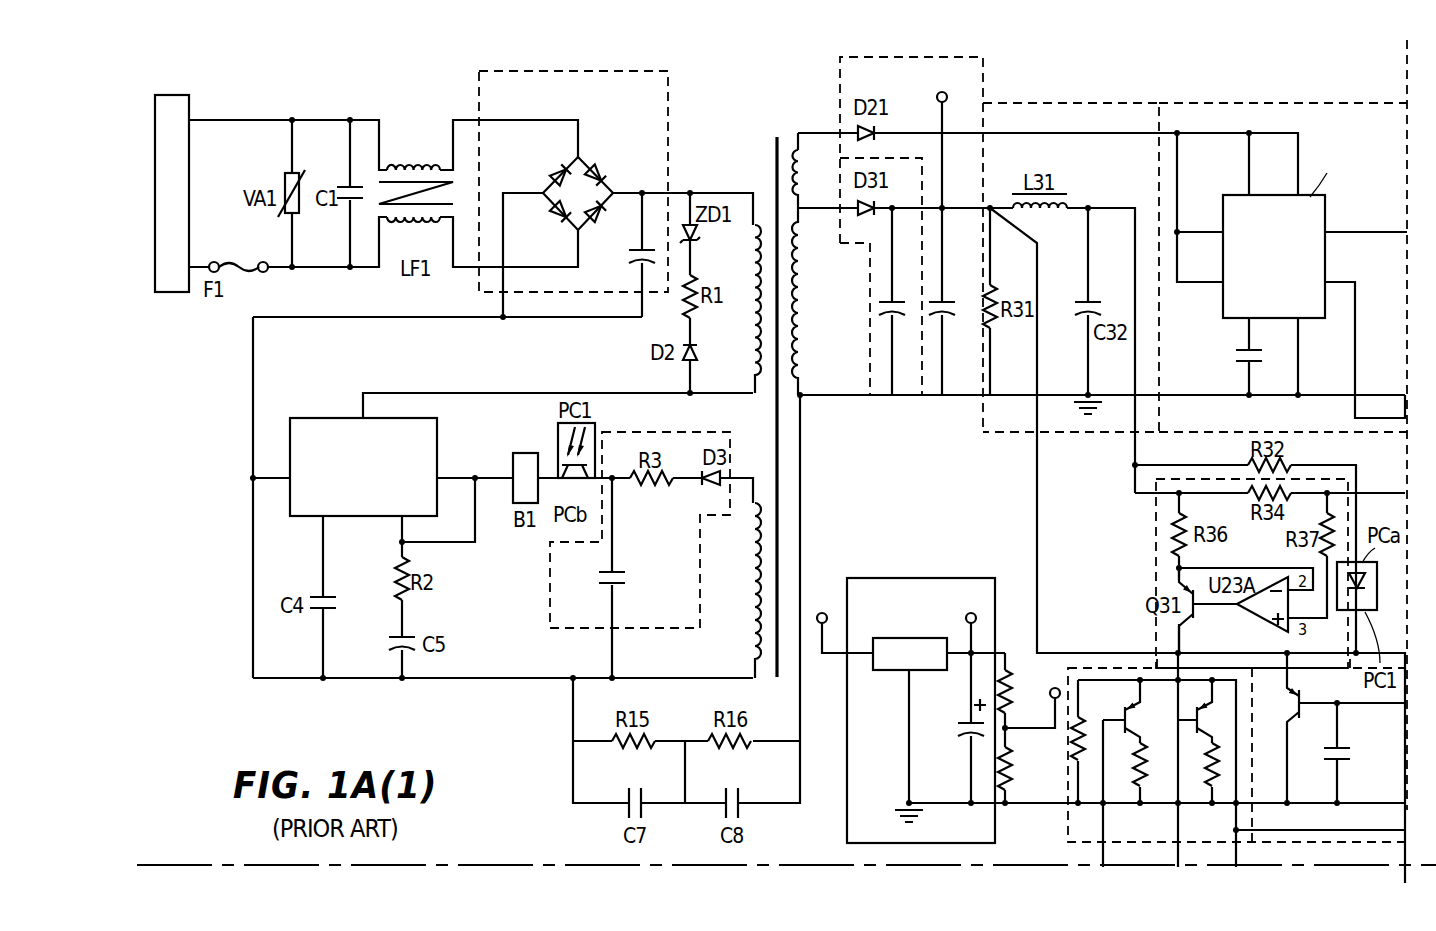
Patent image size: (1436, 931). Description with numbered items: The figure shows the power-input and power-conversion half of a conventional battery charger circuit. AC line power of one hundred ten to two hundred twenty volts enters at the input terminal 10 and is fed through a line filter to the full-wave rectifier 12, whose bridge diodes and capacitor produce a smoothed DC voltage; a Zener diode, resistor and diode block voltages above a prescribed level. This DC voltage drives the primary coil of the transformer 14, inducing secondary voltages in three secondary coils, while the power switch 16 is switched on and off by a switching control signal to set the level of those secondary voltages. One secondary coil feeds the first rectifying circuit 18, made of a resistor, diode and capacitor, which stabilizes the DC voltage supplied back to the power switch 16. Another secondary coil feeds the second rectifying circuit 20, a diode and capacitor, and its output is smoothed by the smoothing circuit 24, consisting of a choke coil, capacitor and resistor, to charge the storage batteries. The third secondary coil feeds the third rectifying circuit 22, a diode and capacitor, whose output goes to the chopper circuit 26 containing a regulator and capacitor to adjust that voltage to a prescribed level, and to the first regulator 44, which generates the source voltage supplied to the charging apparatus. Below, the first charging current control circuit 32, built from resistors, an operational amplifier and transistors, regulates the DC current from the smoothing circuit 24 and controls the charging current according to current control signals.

The input terminal 10 is at (173, 293).
The full-wave rectifier 12 is at (477, 95).
The transformer 14 is at (778, 137).
The power switch 16 is at (310, 417).
The first rectifying circuit 18 is at (550, 577).
The second rectifying circuit 20 is at (870, 332).
The third rectifying circuit 22 is at (840, 62).
The smoothing circuit 24 is at (1068, 102).
The chopper circuit 26 is at (1288, 102).
The first charging current control circuit 32 is at (1068, 825).
The first regulator 44 is at (917, 578).